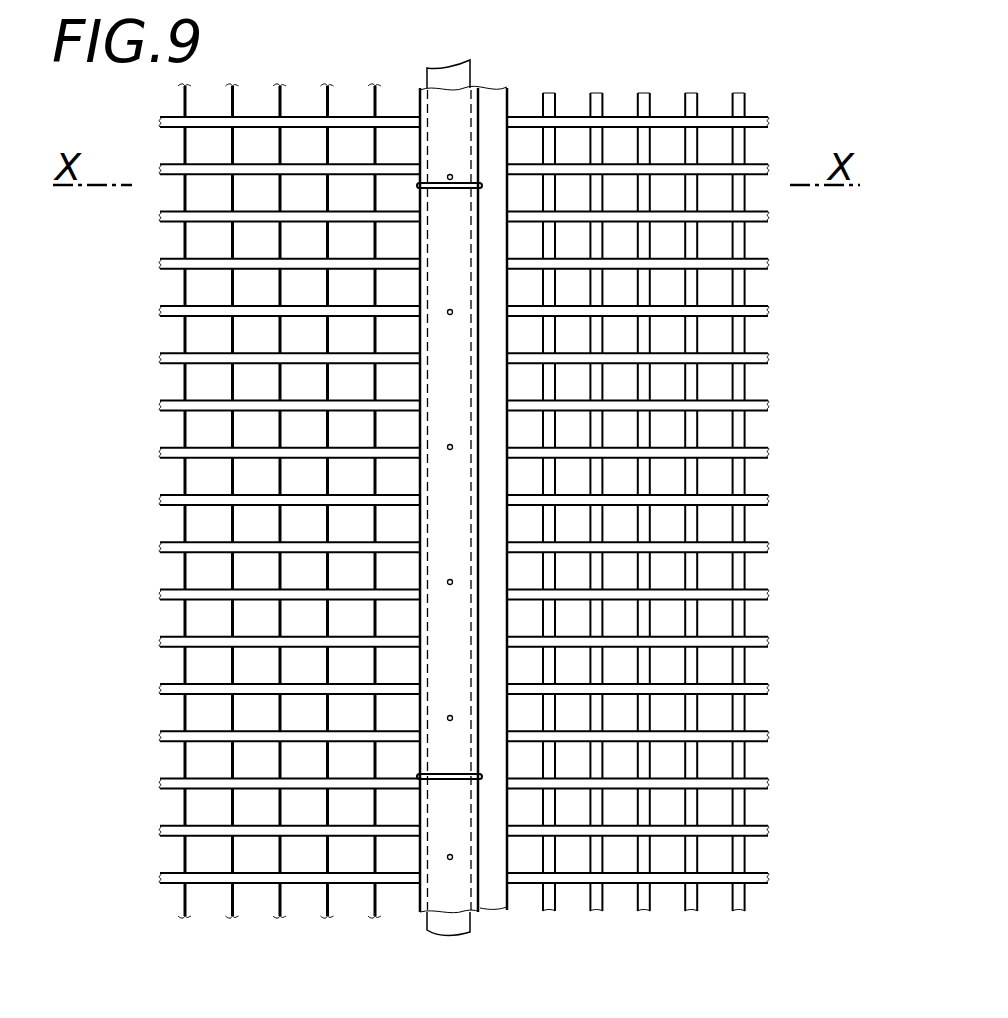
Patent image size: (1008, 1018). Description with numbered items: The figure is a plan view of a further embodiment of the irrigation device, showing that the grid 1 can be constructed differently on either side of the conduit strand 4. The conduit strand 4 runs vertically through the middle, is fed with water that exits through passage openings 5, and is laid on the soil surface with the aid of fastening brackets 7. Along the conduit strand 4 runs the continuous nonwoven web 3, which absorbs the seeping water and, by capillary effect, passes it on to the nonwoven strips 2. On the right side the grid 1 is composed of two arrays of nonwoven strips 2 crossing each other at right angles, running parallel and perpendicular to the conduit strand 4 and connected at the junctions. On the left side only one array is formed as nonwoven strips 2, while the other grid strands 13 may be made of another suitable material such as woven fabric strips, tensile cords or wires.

The grid 1 is at (471, 521).
The nonwoven strips 2 is at (202, 455).
The grid strands 13 is at (232, 618).
The nonwoven web 3 is at (488, 880).
The conduit strand 4 is at (445, 654).
The passage openings 5 is at (450, 857).
The fastening brackets 7 is at (445, 182).